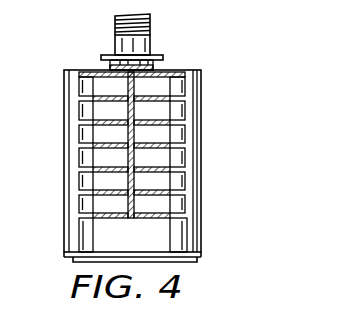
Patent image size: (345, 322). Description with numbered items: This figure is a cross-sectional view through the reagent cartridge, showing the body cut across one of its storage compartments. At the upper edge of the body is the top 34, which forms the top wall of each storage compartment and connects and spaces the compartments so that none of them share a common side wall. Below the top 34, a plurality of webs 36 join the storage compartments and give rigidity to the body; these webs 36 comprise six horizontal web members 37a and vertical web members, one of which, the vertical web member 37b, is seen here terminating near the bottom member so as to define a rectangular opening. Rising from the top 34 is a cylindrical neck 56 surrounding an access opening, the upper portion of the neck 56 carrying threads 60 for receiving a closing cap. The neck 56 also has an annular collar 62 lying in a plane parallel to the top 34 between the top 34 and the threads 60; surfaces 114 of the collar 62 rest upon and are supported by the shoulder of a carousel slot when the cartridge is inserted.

The top 34 is at (157, 72).
The webs 36 is at (157, 94).
The horizontal web members 37a is at (88, 136).
The vertical web member 37b is at (140, 186).
The cylindrical neck 56 is at (151, 50).
The threads 60 is at (117, 27).
The annular collar 62 is at (102, 58).
The surfaces of the annular collars 114 is at (109, 67).